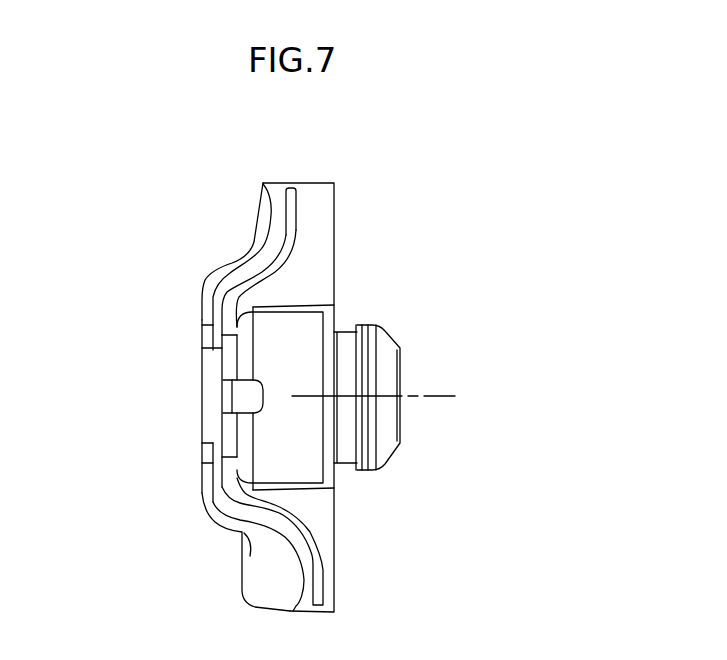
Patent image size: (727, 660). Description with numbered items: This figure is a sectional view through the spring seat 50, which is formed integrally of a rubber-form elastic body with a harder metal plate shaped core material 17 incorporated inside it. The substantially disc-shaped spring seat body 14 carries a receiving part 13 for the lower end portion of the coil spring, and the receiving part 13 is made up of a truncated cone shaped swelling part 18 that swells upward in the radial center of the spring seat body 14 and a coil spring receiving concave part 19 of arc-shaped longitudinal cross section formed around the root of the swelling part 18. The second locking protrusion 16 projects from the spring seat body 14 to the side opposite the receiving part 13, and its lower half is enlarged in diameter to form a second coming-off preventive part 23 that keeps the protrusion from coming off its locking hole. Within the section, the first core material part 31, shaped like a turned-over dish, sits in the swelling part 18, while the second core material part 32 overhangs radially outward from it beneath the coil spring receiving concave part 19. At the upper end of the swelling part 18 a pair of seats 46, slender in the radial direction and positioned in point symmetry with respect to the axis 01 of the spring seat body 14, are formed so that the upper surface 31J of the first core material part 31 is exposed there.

The spring seat body 14 is at (182, 537).
The spring seat 50 is at (427, 268).
The second locking protrusion 16 is at (412, 437).
The second coming-off preventive part 23 is at (380, 458).
The axis 01 is at (393, 399).
The receiving part 13 is at (187, 381).
The coil spring receiving concave part 19 is at (263, 213).
The swelling part 18 is at (230, 473).
The core material 17 is at (271, 335).
The second core material part 32 is at (293, 222).
The first core material part 31 is at (218, 307).
The upper surface of the first core material part 31J is at (213, 324).
The seats 46 is at (205, 310).